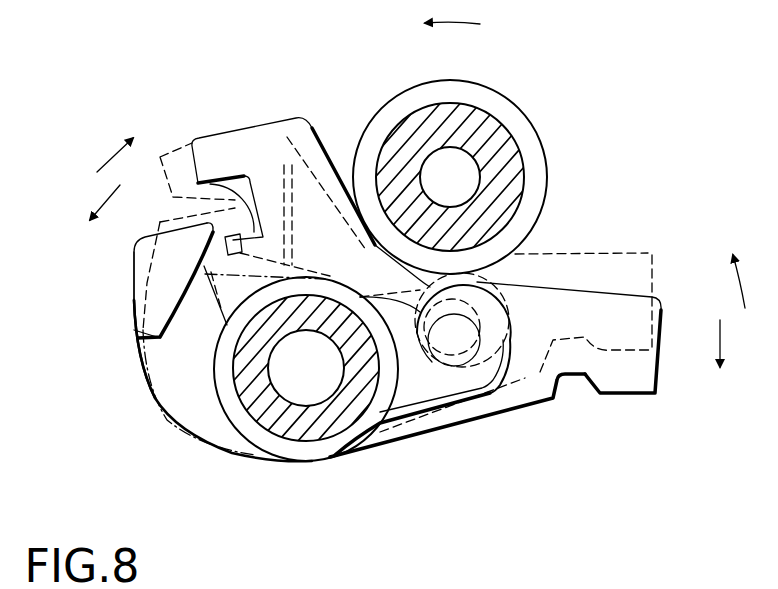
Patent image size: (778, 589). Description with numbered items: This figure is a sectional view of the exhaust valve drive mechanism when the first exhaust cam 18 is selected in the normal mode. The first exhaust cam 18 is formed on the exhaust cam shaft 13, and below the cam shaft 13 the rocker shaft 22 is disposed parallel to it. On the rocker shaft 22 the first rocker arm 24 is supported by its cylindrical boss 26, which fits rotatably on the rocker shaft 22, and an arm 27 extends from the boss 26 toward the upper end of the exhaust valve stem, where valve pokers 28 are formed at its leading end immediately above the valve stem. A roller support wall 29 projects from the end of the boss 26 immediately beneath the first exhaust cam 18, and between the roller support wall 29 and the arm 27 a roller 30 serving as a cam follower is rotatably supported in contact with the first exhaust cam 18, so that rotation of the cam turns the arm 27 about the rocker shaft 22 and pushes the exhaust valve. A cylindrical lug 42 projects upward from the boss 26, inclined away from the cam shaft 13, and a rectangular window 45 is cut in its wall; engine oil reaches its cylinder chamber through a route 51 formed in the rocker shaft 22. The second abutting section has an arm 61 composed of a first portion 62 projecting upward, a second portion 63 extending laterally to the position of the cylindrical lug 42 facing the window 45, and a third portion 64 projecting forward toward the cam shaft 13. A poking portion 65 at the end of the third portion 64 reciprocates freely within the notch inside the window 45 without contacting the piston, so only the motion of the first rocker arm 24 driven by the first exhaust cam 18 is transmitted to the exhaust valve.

The exhaust cam shaft 13 is at (380, 140).
The first exhaust cam 18 is at (540, 140).
The rocker shaft 22 is at (270, 418).
The first rocker arm 24 is at (352, 482).
The cylindrical boss 26 is at (215, 380).
The arm 27 is at (498, 415).
The valve poker 28 is at (637, 388).
The roller support wall 29 is at (445, 407).
The roller 30 is at (532, 372).
The cylindrical lug 42 is at (296, 128).
The window 45 is at (237, 190).
The route 51 is at (310, 385).
The arm 61 is at (118, 353).
The first portion 62 is at (148, 397).
The second portion 63 is at (133, 280).
The third portion 64 is at (140, 232).
The poking portion 65 is at (258, 225).